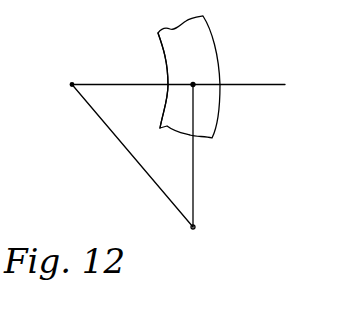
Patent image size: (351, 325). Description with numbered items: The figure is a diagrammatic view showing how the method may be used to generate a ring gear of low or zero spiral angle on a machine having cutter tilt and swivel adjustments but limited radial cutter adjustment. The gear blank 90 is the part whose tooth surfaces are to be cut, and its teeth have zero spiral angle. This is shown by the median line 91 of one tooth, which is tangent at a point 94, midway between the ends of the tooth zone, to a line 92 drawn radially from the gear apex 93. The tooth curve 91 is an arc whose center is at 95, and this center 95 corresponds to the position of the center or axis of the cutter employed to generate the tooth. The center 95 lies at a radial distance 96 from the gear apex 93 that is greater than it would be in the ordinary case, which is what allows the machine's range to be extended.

The gear blank 90 is at (207, 40).
The median line of a tooth 91 is at (178, 83).
The radial line 92 is at (107, 83).
The gear apex 93 is at (70, 86).
The point of tangency 94 is at (194, 83).
The center of the tooth curve 95 is at (196, 227).
The radial distance 96 is at (137, 162).